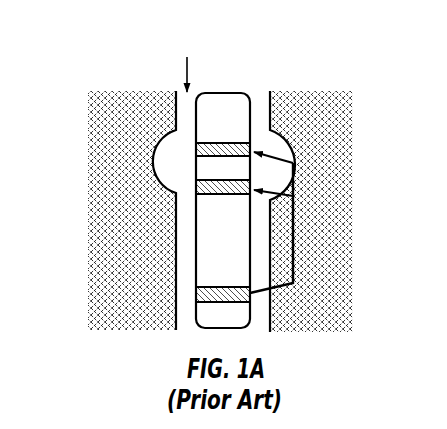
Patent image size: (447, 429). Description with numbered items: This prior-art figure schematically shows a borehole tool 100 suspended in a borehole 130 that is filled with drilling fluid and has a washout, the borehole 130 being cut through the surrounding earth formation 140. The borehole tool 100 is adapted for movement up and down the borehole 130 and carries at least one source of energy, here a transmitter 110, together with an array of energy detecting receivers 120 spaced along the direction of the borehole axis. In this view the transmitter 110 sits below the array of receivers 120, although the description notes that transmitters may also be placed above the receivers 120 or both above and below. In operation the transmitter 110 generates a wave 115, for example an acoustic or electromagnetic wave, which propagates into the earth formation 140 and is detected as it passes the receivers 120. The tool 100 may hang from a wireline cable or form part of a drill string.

The borehole tool 100 is at (237, 108).
The transmitter 110 is at (196, 292).
The wave 115 is at (297, 233).
The receivers 120 is at (196, 145).
The borehole 130 is at (189, 62).
The earth formation 140 is at (125, 218).